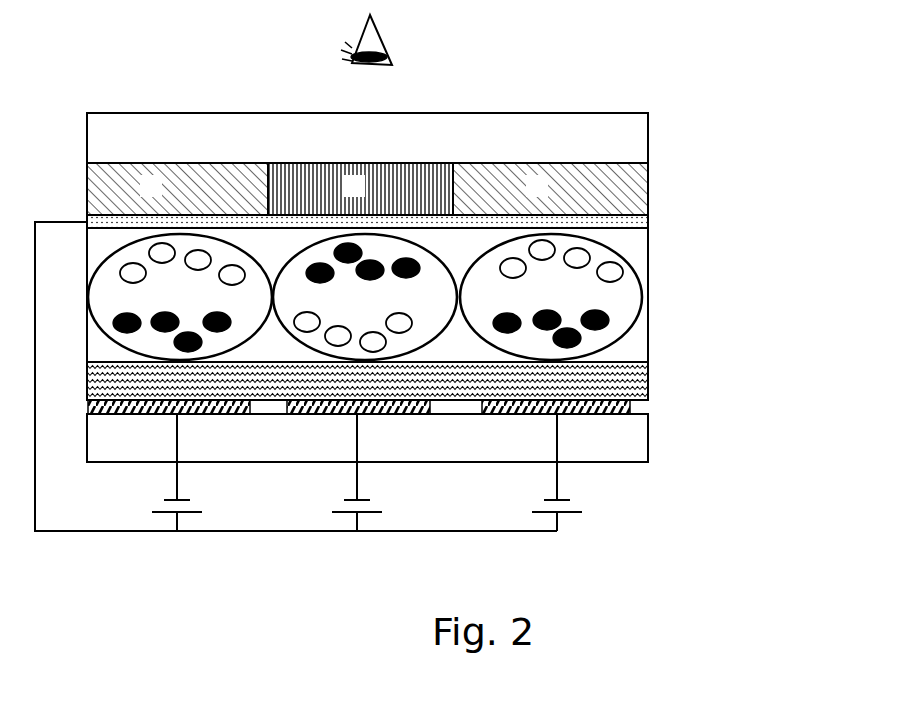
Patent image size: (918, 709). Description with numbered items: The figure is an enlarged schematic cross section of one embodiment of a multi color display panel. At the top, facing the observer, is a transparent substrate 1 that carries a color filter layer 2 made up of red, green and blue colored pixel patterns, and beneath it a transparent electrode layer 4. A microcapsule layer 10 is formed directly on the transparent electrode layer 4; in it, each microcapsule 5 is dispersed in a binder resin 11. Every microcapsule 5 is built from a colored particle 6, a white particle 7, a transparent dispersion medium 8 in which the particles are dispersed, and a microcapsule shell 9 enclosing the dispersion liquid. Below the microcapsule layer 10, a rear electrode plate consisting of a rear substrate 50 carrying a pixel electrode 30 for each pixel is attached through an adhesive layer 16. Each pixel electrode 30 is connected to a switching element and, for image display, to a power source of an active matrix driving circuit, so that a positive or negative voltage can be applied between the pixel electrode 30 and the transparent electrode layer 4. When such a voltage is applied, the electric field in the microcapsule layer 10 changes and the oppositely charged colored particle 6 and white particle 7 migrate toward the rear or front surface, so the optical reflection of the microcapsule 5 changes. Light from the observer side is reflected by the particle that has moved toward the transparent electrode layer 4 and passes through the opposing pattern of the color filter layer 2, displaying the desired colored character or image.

The transparent substrate 1 is at (587, 137).
The color filter layer 2 is at (230, 185).
The transparent electrode layer 4 is at (588, 218).
The binder resin 11 is at (633, 243).
The colored particle 6 is at (567, 338).
The white particle 7 is at (610, 272).
The transparent dispersion medium 8 is at (597, 296).
The microcapsule shell 9 is at (595, 320).
The adhesive layer 16 is at (605, 388).
The pixel electrode 30 is at (290, 413).
The rear substrate 50 is at (515, 448).
The microcapsule 5 is at (793, 233).
The microcapsule layer 10 is at (833, 198).